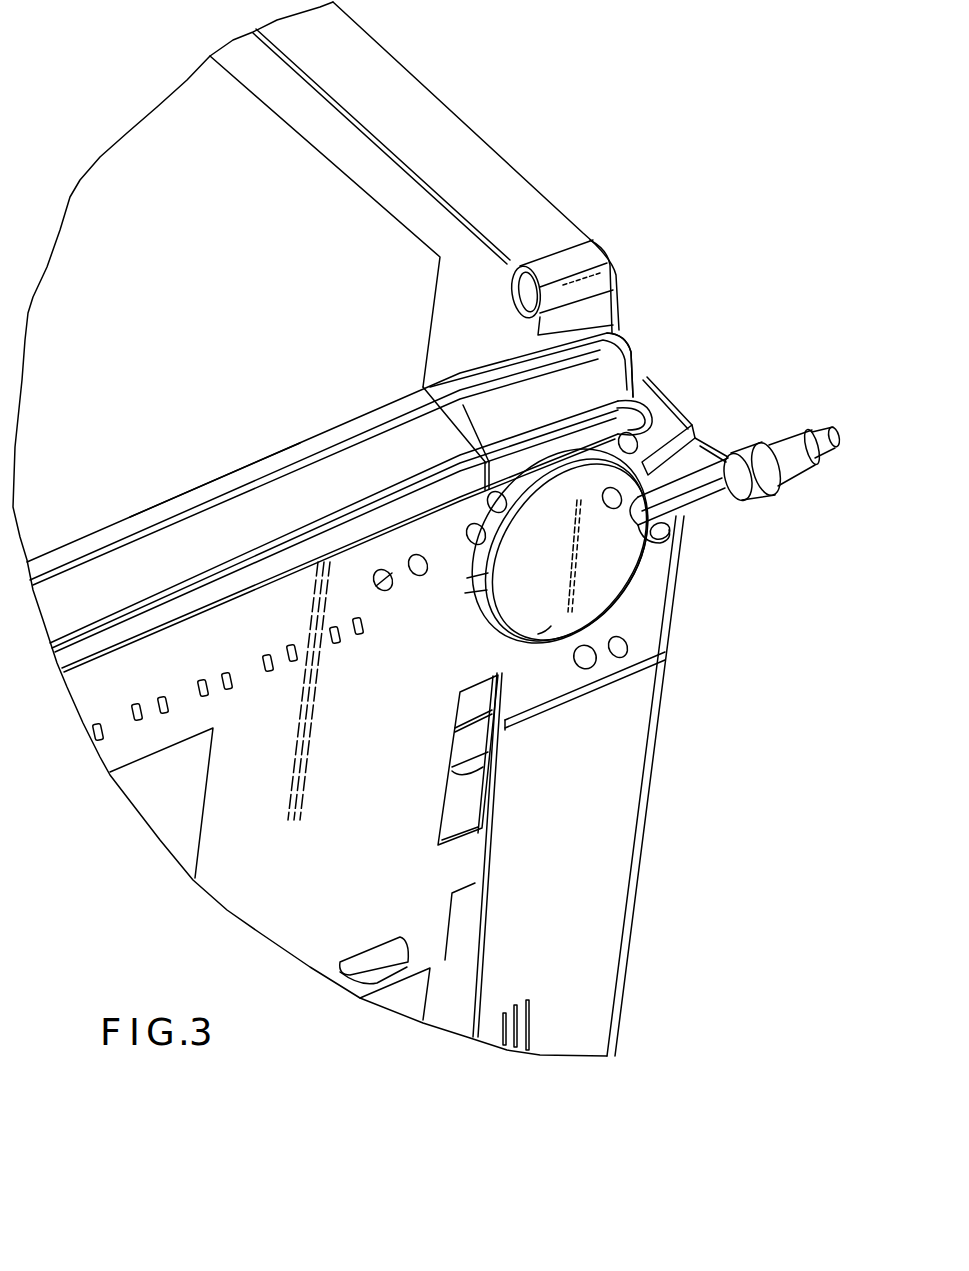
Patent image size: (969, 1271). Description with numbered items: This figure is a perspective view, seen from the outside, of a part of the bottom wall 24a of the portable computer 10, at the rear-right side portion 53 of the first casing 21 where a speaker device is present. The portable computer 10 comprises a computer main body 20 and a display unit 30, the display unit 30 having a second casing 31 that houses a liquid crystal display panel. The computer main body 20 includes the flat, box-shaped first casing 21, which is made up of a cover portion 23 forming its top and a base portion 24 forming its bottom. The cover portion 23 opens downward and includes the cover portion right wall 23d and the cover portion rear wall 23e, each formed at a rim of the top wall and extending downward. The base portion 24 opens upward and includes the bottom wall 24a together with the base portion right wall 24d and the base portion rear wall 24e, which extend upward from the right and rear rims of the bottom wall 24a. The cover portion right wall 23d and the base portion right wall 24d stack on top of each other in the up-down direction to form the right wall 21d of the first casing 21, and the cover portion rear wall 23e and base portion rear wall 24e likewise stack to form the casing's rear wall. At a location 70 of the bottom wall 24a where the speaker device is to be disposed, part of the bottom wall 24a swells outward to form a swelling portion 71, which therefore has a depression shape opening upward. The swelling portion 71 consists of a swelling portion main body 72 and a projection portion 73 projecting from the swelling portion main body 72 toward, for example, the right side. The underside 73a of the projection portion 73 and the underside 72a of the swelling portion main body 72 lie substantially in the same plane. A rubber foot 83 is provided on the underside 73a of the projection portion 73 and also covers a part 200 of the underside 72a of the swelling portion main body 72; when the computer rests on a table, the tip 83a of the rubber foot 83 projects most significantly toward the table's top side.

The portable computer 10 is at (477, 126).
The computer main body 20 is at (603, 923).
The first casing 21 is at (627, 840).
The right wall 21d is at (672, 630).
The cover portion 23 is at (90, 530).
The cover portion right wall 23d is at (622, 333).
The cover portion rear wall 23e is at (243, 475).
The base portion 24 is at (190, 550).
The bottom wall 24a is at (613, 753).
The base portion right wall 24d is at (645, 375).
The base portion rear wall 24e is at (307, 480).
The display unit 30 is at (525, 215).
The second casing 31 is at (376, 76).
The rear-right side portion 53 is at (648, 602).
The location 70 is at (652, 562).
The swelling portion 71 is at (524, 624).
The swelling portion main body 72 is at (513, 597).
The underside of the swelling portion main body 72a is at (550, 623).
The projection portion 73 is at (692, 428).
The underside of the projection portion 73a is at (725, 456).
The rubber foot 83 is at (724, 458).
The tip of the rubber foot 83a is at (726, 500).
The part of the underside of the swelling portion main body 200 is at (662, 530).